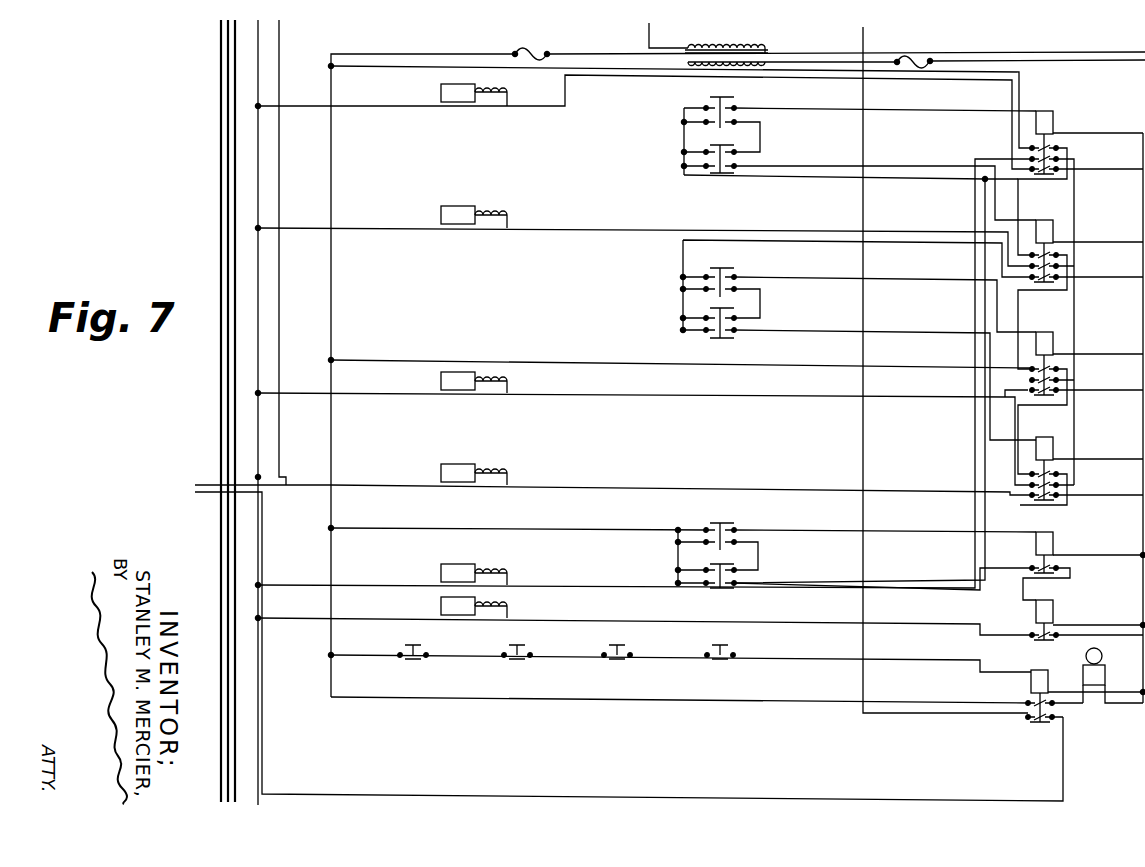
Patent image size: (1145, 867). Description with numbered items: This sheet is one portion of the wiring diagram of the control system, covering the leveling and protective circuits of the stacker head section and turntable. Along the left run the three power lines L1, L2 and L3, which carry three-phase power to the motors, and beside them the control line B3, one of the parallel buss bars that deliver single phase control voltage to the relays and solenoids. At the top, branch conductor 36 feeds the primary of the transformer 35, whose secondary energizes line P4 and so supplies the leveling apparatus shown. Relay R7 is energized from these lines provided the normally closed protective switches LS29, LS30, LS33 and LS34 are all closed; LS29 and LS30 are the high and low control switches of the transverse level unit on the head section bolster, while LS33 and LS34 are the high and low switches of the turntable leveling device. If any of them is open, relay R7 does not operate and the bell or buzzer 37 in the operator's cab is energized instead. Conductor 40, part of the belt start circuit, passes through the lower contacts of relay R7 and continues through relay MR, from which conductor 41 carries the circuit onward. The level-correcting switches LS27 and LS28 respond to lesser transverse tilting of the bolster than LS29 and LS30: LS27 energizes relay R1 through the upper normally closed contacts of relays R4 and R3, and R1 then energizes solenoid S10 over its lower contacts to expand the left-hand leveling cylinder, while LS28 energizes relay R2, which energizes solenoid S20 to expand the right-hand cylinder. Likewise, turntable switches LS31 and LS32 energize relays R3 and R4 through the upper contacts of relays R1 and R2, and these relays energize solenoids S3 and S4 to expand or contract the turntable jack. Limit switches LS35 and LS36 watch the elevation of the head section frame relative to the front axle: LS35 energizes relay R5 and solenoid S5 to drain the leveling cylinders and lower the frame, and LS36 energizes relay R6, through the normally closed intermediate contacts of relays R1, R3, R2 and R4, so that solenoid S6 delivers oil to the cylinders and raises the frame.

The power line L1 is at (221, 88).
The power line L2 is at (228, 110).
The power line L3 is at (235, 133).
The control line B3 is at (260, 48).
The conductor 41 is at (279, 196).
The conductor 40 is at (865, 152).
The line P4 is at (331, 80).
The branch line or conductor 36 is at (649, 35).
The transformer 35 is at (768, 48).
The bell or buzzer 37 is at (1098, 672).
The solenoid S10 is at (645, 122).
The solenoid S20 is at (645, 236).
The solenoid S3 is at (645, 428).
The solenoid S4 is at (681, 479).
The solenoid S5 is at (645, 373).
The solenoid S6 is at (645, 616).
The high limit switch LS27 is at (858, 127).
The low limit switch LS28 is at (858, 355).
The high control switch LS29 is at (413, 643).
The low control switch LS30 is at (517, 643).
The high limit switch LS31 is at (858, 286).
The low limit switch LS32 is at (858, 365).
The high switch LS33 is at (617, 643).
The low switch LS34 is at (720, 643).
The limit switch LS35 is at (855, 544).
The limit switch LS36 is at (853, 567).
The relay R1 is at (1080, 288).
The relay R2 is at (1080, 285).
The relay R3 is at (1080, 393).
The relay R4 is at (1081, 461).
The relay R5 is at (1084, 556).
The relay R6 is at (1087, 610).
The relay R7 is at (1085, 686).